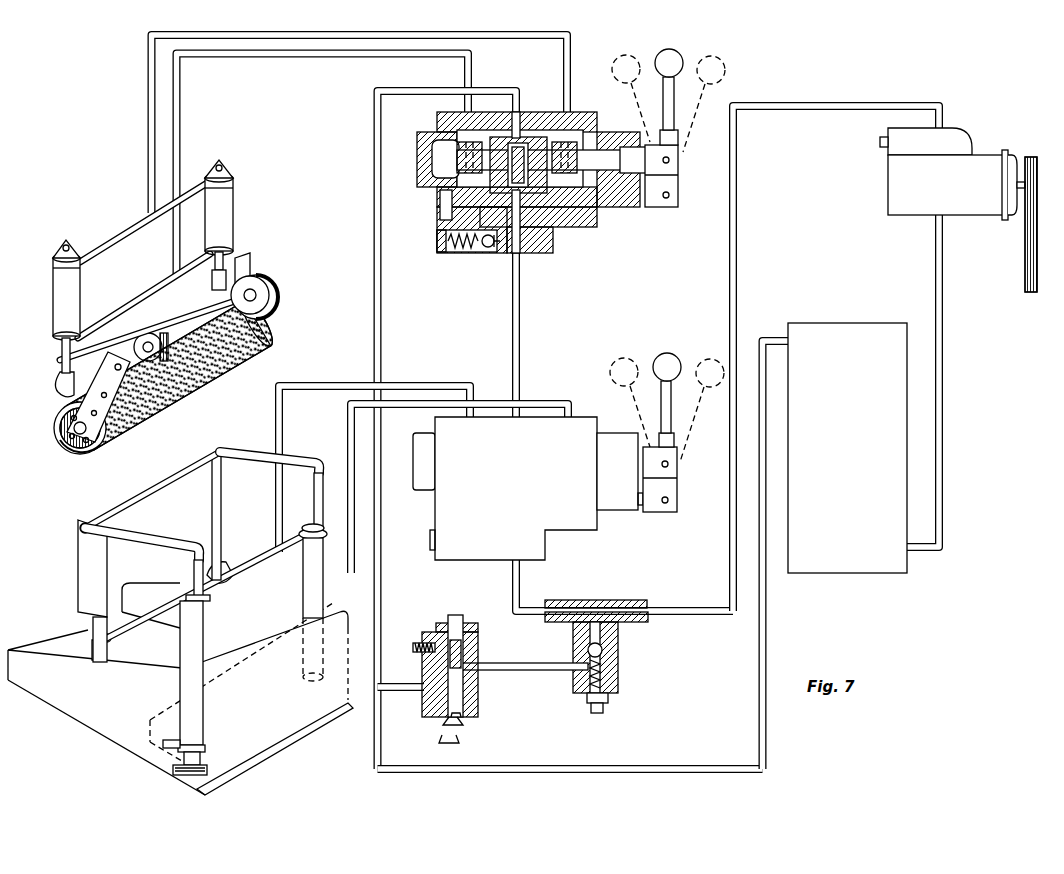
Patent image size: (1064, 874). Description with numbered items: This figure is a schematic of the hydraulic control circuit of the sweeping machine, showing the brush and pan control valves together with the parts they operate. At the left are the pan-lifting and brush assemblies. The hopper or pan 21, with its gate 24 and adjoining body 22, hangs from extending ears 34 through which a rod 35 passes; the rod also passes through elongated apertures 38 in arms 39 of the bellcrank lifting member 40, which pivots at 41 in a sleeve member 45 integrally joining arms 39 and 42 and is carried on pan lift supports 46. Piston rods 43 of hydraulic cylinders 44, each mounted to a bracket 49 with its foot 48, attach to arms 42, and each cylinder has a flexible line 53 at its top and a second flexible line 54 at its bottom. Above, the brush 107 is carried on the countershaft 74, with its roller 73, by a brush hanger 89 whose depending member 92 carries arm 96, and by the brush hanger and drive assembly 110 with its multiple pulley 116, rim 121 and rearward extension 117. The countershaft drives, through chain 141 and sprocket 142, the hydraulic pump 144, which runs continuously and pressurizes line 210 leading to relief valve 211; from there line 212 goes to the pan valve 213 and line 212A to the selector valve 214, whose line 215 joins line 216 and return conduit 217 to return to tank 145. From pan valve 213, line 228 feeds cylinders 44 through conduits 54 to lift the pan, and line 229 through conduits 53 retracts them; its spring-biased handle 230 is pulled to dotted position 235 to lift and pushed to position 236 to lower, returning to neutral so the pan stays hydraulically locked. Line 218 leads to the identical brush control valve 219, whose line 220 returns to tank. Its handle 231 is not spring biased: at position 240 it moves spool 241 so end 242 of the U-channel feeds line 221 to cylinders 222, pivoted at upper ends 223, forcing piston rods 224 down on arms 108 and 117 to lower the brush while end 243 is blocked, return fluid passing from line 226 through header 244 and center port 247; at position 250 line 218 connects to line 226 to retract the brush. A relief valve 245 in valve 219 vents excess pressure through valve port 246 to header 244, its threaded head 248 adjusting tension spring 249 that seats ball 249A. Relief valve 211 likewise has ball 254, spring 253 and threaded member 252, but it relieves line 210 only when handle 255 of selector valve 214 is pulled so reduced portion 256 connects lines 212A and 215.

The hopper 21 is at (120, 700).
The housing 22 is at (238, 624).
The gate 24 is at (276, 700).
The extending ears 34 is at (96, 662).
The rod 35 is at (158, 615).
The elongated apertures 38 is at (111, 641).
The arms 39 is at (92, 622).
The bellcrank lifting member 40 is at (191, 518).
The pivot 41 is at (80, 527).
The arms 42 is at (256, 452).
The piston rods 43 is at (194, 578).
The hydraulic cylinders 44 is at (304, 580).
The sleeve member 45 is at (150, 492).
The pan lift supports 46 is at (79, 566).
The foot block 48 is at (205, 748).
The bracket 49 is at (207, 762).
The flexible line 53 is at (300, 538).
The second flexible line 54 is at (170, 750).
The roller 73 is at (143, 333).
The countershaft 74 is at (192, 330).
The brush hanger 89 is at (58, 434).
The depending member 92 is at (106, 355).
The arm 96 is at (78, 448).
The brush 107 is at (190, 393).
The arm 108 is at (62, 380).
The brush hanger and drive assembly 110 is at (252, 262).
The multiple pulley 116 is at (268, 285).
The rearward extension 117 is at (218, 292).
The rim 121 is at (270, 310).
The chain 141 is at (1025, 260).
The sprocket 142 is at (1022, 160).
The hydraulic pump 144 is at (965, 205).
The tank 145 is at (848, 436).
The line 210 is at (876, 102).
The relief valve 211 is at (615, 673).
The line 212 is at (521, 590).
The line 212A is at (533, 670).
The pan valve 213 is at (527, 495).
The selector valve 214 is at (468, 682).
The line 215 is at (404, 692).
The line 216 is at (526, 766).
The return conduit 217 is at (938, 410).
The line 218 is at (520, 347).
The brush control valve 219 is at (517, 190).
The line 220 is at (372, 326).
The line 221 is at (569, 42).
The hydraulic cylinders 222 is at (55, 296).
The upper ends 223 is at (68, 240).
The piston rods 224 is at (62, 348).
The line 226 is at (322, 60).
The line 228 is at (487, 398).
The line 229 is at (326, 382).
The handle 230 is at (667, 353).
The handle 231 is at (671, 50).
The dotted line position 235 is at (710, 359).
The dotted line position 236 is at (625, 358).
The dotted line position 240 is at (719, 58).
The spool 241 is at (434, 156).
The end of U-channel 242 is at (545, 215).
The end of U-channel 243 is at (517, 148).
The header 244 is at (530, 118).
The relief valve 245 is at (440, 252).
The valve port 246 is at (440, 205).
The center port 247 is at (540, 150).
The threaded head 248 is at (460, 255).
The tension spring 249 is at (486, 250).
The ball 249A is at (496, 250).
The dotted line position 250 is at (625, 55).
The threaded member 252 is at (603, 713).
The spring 253 is at (602, 672).
The ball 254 is at (604, 654).
The handle 255 is at (466, 737).
The reduced portion 256 is at (463, 650).